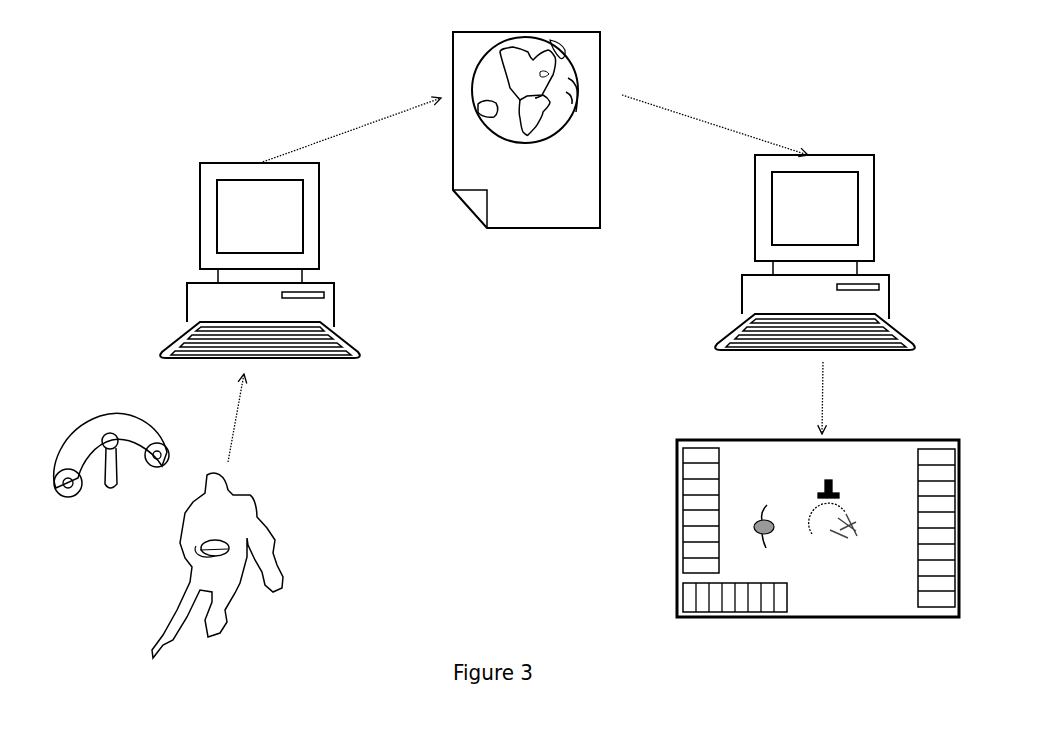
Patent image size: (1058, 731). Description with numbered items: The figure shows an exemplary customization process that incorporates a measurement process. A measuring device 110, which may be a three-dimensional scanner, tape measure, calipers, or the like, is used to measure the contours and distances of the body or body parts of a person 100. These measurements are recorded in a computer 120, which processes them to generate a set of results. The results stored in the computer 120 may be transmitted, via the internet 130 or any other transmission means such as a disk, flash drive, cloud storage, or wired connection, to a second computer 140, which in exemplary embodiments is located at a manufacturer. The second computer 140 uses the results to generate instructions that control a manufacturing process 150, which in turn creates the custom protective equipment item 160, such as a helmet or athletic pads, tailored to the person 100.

The person 100 is at (289, 517).
The measuring device 110 is at (93, 412).
The computer 120 is at (200, 217).
The internet 130 is at (453, 33).
The second computer 140 is at (875, 207).
The manufacturing process 150 is at (665, 467).
The custom protective equipment item 160 is at (851, 499).